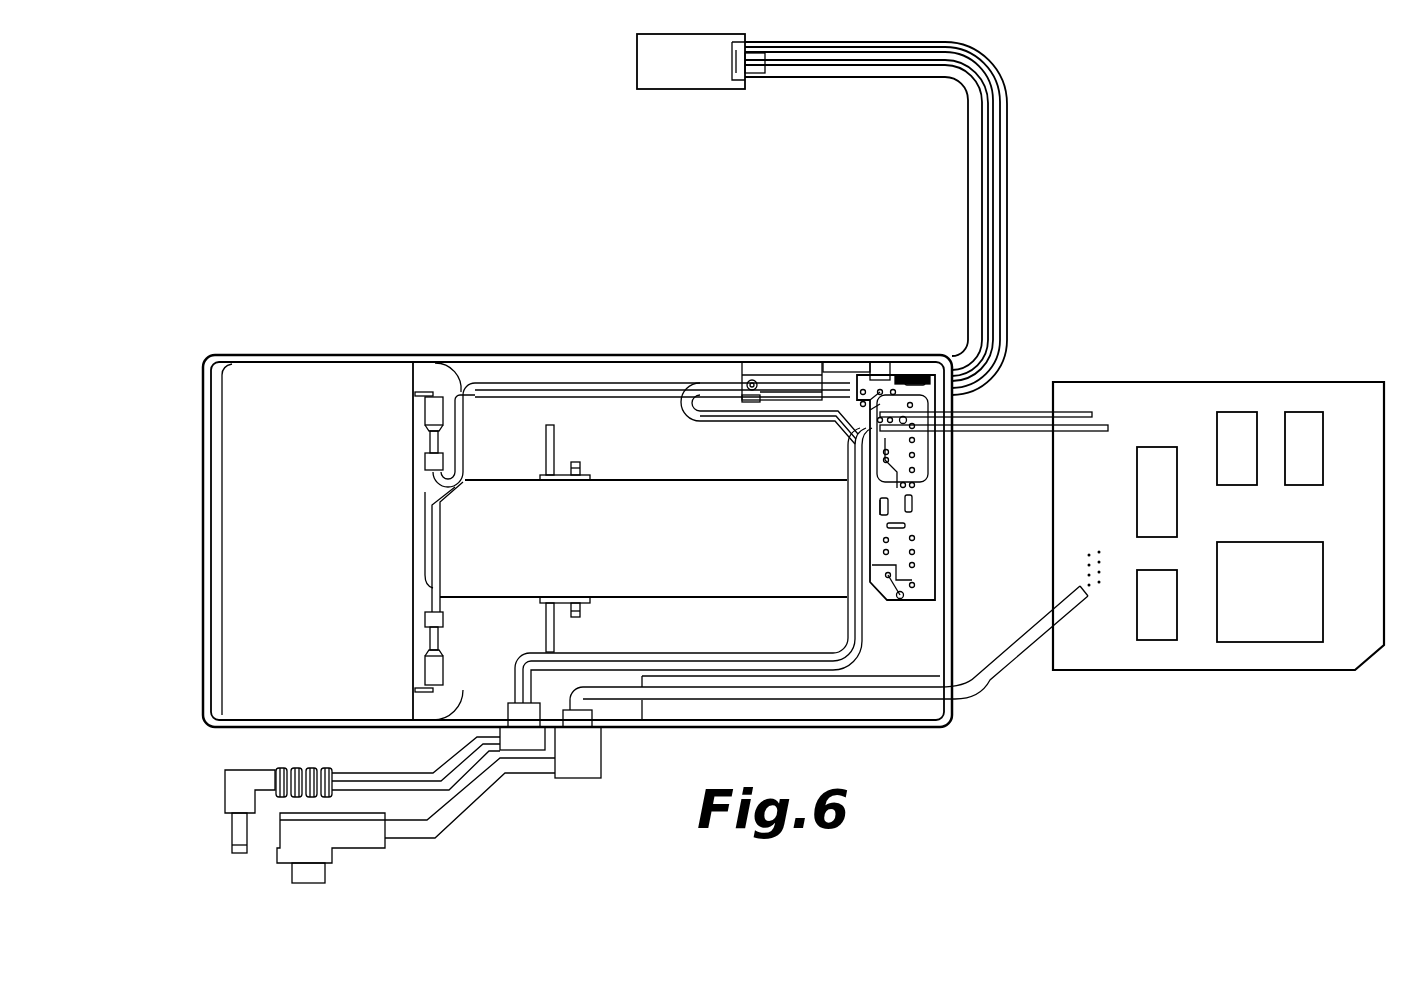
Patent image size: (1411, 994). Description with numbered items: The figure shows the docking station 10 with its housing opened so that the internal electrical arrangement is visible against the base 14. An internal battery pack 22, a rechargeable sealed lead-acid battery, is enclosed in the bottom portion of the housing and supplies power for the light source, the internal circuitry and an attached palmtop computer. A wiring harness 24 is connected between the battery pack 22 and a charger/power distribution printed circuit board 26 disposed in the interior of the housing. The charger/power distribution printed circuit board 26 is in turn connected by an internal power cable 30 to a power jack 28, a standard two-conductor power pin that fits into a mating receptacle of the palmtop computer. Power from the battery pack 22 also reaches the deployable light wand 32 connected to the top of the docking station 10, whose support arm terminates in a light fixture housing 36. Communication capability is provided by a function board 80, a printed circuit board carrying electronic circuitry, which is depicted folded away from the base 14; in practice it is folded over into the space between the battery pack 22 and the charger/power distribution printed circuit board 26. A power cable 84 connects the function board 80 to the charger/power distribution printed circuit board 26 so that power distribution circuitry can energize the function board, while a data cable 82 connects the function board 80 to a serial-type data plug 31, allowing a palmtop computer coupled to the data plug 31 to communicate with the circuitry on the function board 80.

The docking station 10 is at (360, 181).
The base portion 14 is at (557, 352).
The battery pack 22 is at (268, 528).
The wiring harness 24 is at (690, 385).
The charger/power distribution printed circuit board 26 is at (920, 521).
The power jack 28 is at (238, 790).
The internal power cable 30 is at (568, 660).
The data plug 31 is at (372, 833).
The light wand 32 is at (992, 165).
The light fixture housing 36 is at (716, 74).
The function board 80 is at (1298, 395).
The data cable 82 is at (998, 665).
The power cable 84 is at (985, 420).